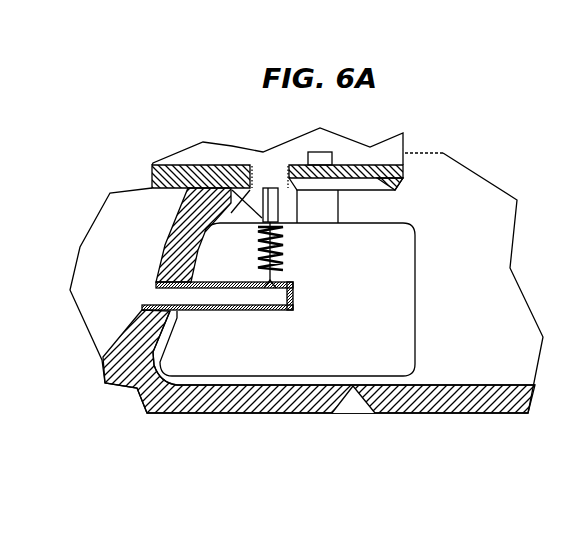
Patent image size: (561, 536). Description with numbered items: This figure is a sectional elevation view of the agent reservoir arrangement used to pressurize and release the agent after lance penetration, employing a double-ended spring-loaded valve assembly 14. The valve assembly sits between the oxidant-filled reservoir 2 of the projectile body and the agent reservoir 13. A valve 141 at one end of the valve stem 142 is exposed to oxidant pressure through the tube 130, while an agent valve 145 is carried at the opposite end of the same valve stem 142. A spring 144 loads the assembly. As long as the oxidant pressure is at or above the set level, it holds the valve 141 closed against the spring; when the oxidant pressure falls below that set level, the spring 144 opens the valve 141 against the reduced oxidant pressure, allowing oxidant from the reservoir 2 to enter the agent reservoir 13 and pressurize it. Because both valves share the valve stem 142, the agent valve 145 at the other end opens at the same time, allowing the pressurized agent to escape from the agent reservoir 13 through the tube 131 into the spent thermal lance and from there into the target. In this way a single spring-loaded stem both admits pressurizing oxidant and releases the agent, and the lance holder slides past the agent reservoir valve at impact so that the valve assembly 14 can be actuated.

The reservoir 2 is at (130, 262).
The agent reservoir 13 is at (374, 293).
The double-ended spring-loaded valve assembly 14 is at (293, 274).
The tube 130 is at (206, 324).
The tube 131 is at (278, 206).
The valve 141 is at (293, 292).
The valve stem 142 is at (266, 270).
The spring 144 is at (283, 245).
The agent valve 145 is at (252, 190).